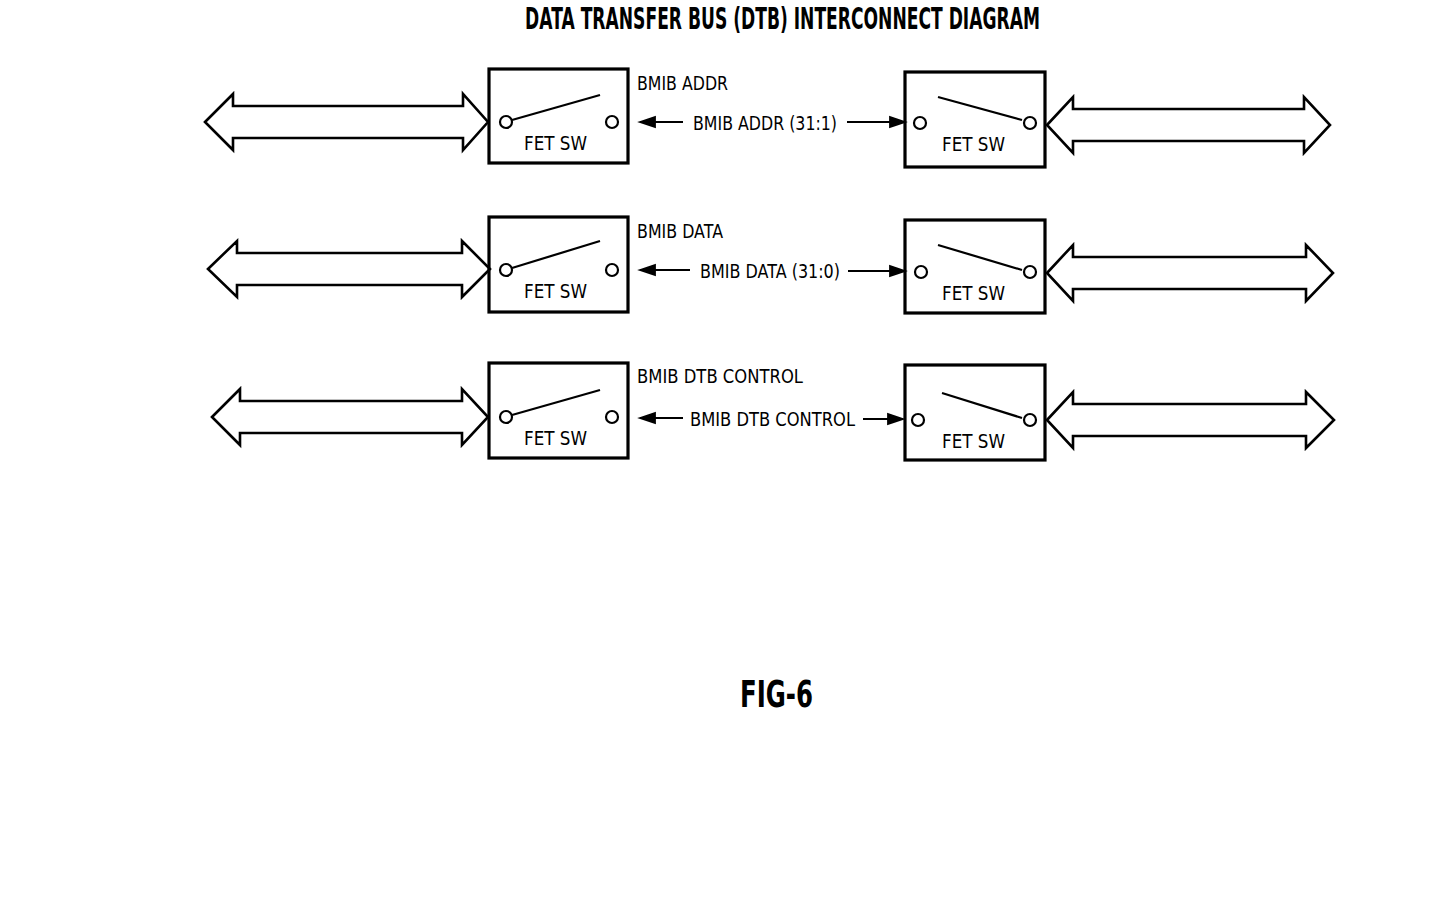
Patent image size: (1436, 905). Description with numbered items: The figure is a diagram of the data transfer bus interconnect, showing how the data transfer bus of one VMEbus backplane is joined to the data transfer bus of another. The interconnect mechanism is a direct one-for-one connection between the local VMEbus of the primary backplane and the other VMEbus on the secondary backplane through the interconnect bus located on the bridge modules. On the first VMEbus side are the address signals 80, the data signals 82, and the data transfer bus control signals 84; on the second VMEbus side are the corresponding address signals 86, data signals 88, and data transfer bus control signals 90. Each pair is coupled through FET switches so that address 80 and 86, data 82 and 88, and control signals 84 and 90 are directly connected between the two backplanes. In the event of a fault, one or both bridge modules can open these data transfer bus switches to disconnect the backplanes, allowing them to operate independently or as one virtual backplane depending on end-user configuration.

The address signals 80 is at (218, 138).
The data signals 82 is at (222, 282).
The data transfer bus control signals 84 is at (218, 428).
The address signals 86 is at (1320, 140).
The data signals 88 is at (1325, 287).
The data transfer bus control signals 90 is at (1323, 437).